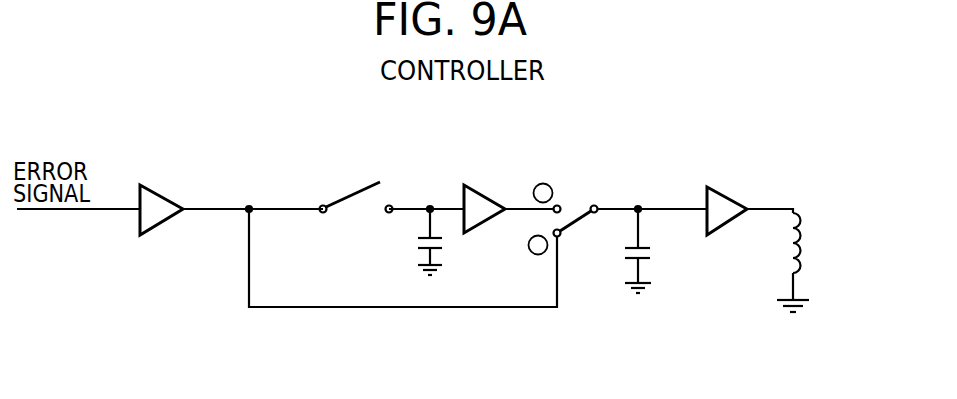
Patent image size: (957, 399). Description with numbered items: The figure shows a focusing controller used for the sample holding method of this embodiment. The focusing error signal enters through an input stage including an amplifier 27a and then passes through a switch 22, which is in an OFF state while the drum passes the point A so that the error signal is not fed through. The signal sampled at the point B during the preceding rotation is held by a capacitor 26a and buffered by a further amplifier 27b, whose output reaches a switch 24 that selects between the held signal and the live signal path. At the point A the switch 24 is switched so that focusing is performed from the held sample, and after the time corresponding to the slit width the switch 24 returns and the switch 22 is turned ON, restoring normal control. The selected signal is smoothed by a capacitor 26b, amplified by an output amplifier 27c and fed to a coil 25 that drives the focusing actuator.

The amplifier 27a is at (167, 186).
The switch 22 is at (350, 197).
The capacitor 26a is at (444, 254).
The amplifier 27b is at (490, 187).
The switch 24 is at (590, 206).
The capacitor 26b is at (652, 253).
The amplifier 27c is at (738, 198).
The coil 25 is at (805, 243).